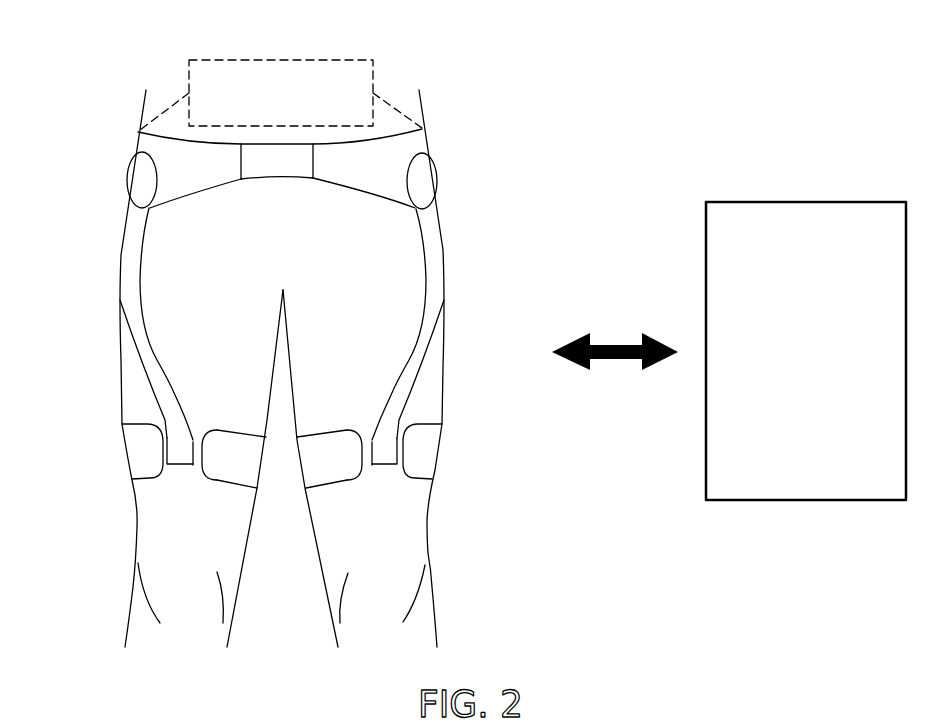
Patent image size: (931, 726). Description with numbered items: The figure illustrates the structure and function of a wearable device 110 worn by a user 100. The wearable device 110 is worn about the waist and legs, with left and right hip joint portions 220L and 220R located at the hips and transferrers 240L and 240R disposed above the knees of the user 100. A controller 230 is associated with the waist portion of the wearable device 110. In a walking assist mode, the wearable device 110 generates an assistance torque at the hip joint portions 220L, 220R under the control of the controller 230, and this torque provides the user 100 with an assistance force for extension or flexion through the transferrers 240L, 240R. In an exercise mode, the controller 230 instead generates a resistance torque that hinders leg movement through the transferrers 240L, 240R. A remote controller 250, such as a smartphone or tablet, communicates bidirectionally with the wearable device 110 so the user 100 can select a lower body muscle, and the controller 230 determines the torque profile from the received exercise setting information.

The user 100 is at (430, 553).
The wearable device 110 is at (177, 145).
The right hip joint portion 220R is at (140, 183).
The left hip joint portion 220L is at (425, 183).
The controller 230 is at (283, 59).
The right transferrer 240R is at (173, 453).
The left transferrer 240L is at (388, 455).
The remote controller 250 is at (807, 202).